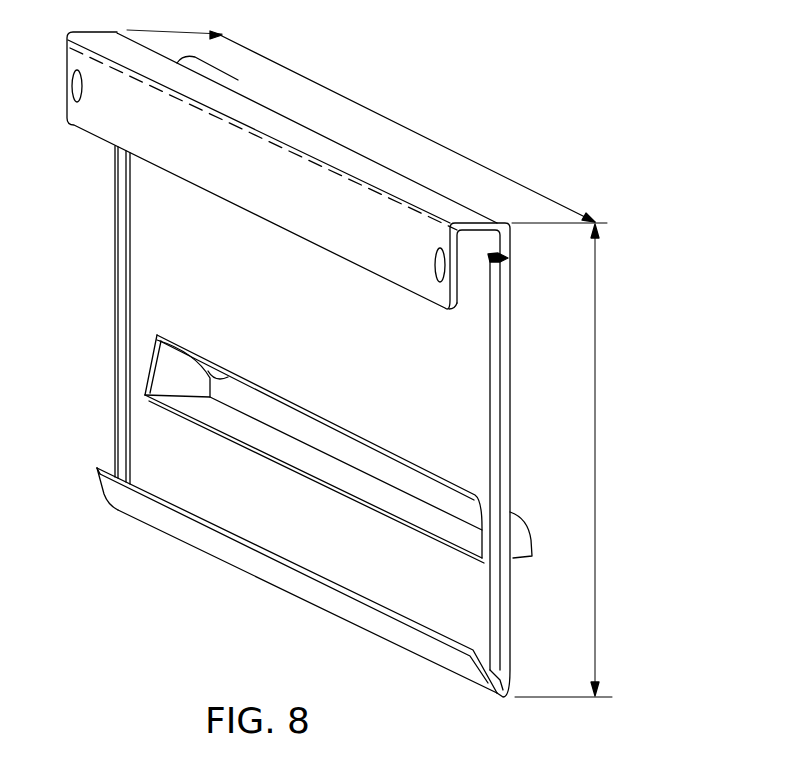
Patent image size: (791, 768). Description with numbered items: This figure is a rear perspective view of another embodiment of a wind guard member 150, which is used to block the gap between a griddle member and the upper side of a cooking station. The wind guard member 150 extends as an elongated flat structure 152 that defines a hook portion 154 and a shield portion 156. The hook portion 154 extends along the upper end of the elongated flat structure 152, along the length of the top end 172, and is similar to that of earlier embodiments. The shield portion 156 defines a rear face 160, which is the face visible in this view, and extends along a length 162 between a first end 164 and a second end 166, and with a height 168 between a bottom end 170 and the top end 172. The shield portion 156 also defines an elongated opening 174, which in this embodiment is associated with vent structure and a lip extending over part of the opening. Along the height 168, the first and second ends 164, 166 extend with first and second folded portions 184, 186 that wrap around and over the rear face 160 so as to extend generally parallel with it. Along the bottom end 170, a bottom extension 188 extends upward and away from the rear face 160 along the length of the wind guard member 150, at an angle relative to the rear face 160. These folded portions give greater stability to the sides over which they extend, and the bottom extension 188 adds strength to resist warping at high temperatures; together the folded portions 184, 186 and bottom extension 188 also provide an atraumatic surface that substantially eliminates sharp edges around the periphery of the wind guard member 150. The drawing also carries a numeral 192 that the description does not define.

The wind guard member 150 is at (623, 197).
The elongated flat structure 152 is at (105, 227).
The hook portion 154 is at (465, 262).
The shield portion 156 is at (153, 253).
The rear face 160 is at (292, 456).
The length 162 is at (497, 173).
The first end 164 is at (511, 478).
The second end 166 is at (115, 352).
The height 168 is at (597, 339).
The bottom end 170 is at (467, 680).
The top end 172 is at (231, 75).
The elongated opening 174 is at (228, 371).
The first folded portion 184 is at (505, 640).
The second folded portion 186 is at (128, 417).
The bottom extension 188 is at (377, 622).
The slot edge 192 is at (240, 417).